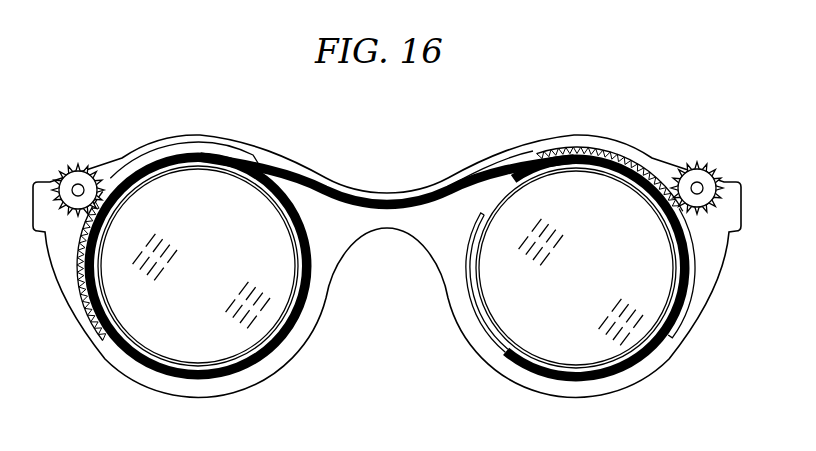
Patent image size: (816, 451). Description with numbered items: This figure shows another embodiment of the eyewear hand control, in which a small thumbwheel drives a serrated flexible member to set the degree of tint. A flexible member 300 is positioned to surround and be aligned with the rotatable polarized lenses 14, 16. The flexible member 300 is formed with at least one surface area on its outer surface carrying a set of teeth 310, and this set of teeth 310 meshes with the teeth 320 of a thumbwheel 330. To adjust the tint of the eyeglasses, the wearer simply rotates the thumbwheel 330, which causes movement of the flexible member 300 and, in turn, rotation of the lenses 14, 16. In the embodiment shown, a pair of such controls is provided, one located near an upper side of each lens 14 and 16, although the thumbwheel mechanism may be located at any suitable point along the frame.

The rotatable polarized lens 14 is at (165, 332).
The rotatable polarized lens 16 is at (545, 342).
The flexible member 300 is at (285, 176).
The set of teeth 310 is at (567, 150).
The teeth 320 is at (694, 168).
The thumbwheel 330 is at (708, 184).